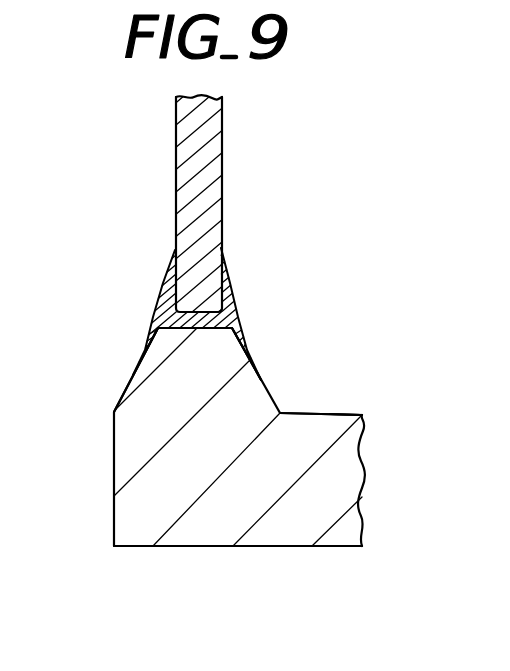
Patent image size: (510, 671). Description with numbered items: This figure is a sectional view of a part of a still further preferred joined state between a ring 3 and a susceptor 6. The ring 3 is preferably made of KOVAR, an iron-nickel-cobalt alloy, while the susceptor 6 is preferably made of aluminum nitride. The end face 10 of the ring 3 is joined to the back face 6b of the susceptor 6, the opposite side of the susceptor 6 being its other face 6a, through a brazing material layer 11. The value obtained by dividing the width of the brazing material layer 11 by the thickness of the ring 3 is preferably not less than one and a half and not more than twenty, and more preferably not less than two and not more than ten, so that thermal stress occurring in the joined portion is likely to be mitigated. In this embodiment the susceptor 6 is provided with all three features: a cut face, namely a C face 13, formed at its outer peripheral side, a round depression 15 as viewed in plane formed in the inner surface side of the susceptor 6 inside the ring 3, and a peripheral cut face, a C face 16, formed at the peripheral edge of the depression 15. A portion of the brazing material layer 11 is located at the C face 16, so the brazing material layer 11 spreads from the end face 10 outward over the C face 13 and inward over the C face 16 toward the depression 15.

The ring 3 is at (200, 157).
The susceptor 6 is at (123, 465).
The bottom surface of base member 6a is at (273, 547).
The back face 6b is at (305, 413).
The end face 10 is at (197, 312).
The brazing material layer 11 is at (162, 305).
The C face 13 is at (125, 391).
The depression 15 is at (347, 413).
The C face 16 is at (262, 380).